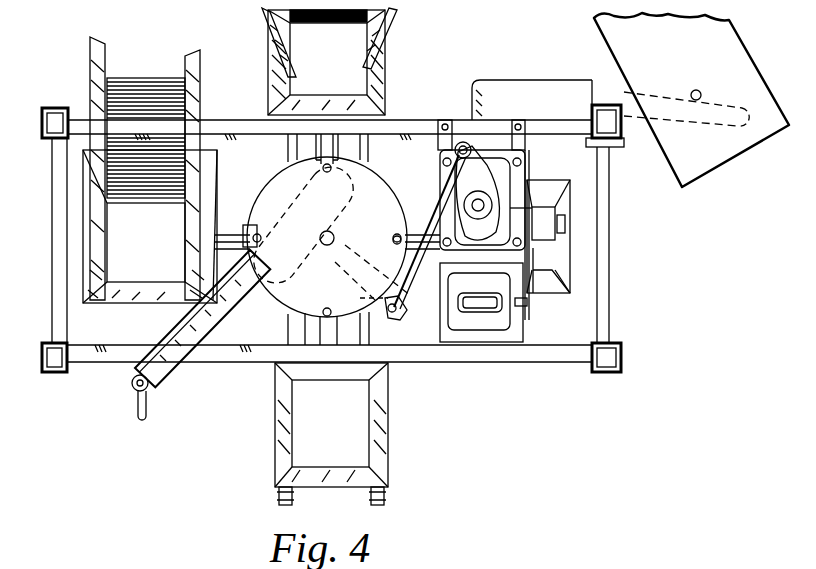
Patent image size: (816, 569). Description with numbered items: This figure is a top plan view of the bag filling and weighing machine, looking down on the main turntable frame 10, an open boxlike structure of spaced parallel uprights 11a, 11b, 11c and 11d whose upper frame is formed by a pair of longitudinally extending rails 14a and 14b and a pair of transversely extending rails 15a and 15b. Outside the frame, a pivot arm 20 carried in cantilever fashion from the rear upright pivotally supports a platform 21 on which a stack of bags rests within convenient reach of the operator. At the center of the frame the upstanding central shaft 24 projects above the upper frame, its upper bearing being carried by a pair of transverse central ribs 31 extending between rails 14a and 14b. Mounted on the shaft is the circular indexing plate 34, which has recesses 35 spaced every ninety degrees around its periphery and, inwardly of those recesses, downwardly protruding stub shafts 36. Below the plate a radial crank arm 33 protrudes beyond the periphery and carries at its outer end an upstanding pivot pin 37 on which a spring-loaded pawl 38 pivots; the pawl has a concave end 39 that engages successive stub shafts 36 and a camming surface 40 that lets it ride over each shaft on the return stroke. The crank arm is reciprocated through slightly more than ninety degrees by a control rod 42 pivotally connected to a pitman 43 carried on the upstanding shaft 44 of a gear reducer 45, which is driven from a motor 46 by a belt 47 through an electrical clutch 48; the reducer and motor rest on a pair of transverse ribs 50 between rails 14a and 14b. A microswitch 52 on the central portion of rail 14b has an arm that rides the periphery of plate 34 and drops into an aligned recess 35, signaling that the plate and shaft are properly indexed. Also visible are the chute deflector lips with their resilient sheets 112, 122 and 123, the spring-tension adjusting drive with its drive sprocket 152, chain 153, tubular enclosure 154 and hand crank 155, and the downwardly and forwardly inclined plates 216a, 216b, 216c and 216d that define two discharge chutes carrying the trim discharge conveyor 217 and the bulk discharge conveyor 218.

The main turntable frame 10 is at (571, 357).
The upright 11a is at (54, 372).
The upright 11b is at (615, 372).
The upright 11c is at (600, 100).
The upright 11d is at (52, 107).
The longitudinally extending rail 14a is at (116, 345).
The longitudinally extending rail 14b is at (247, 126).
The transversely extending rail 15a is at (40, 240).
The transversely extending rail 15b is at (603, 276).
The pivot arm 20 is at (650, 100).
The platform 21 is at (750, 50).
The central shaft 24 is at (340, 231).
The central ribs 31 is at (288, 147).
The crank arm 33 is at (354, 270).
The circular indexing plate 34 is at (270, 190).
The recesses 35 is at (303, 225).
The stub shafts 36 is at (312, 302).
The pivot pin 37 is at (406, 308).
The pawl 38 is at (353, 281).
The concave end 39 is at (389, 246).
The camming surface 40 is at (366, 307).
The control rod 42 is at (438, 192).
The pitman 43 is at (480, 176).
The upstanding shaft 44 is at (477, 214).
The gear reducer 45 is at (529, 170).
The motor 46 is at (468, 326).
The belt 47 is at (545, 268).
The electrical clutch 48 is at (566, 218).
The transversely extending ribs 50 is at (528, 136).
The microswitch 52 is at (330, 132).
The resilient sheet 112 is at (108, 281).
The resilient sheets 122 is at (617, 288).
The resilient sheet 123 is at (350, 100).
The drive sprocket 152 is at (149, 388).
The chain 153 is at (136, 396).
The tubular enclosure 154 is at (167, 343).
The crank 155 is at (148, 412).
The inclined plate 216a is at (96, 60).
The inclined plate 216b is at (208, 56).
The inclined plate 216c is at (262, 10).
The inclined plate 216d is at (398, 24).
The trim discharge conveyor 217 is at (165, 78).
The bulk discharge conveyor 218 is at (343, 24).